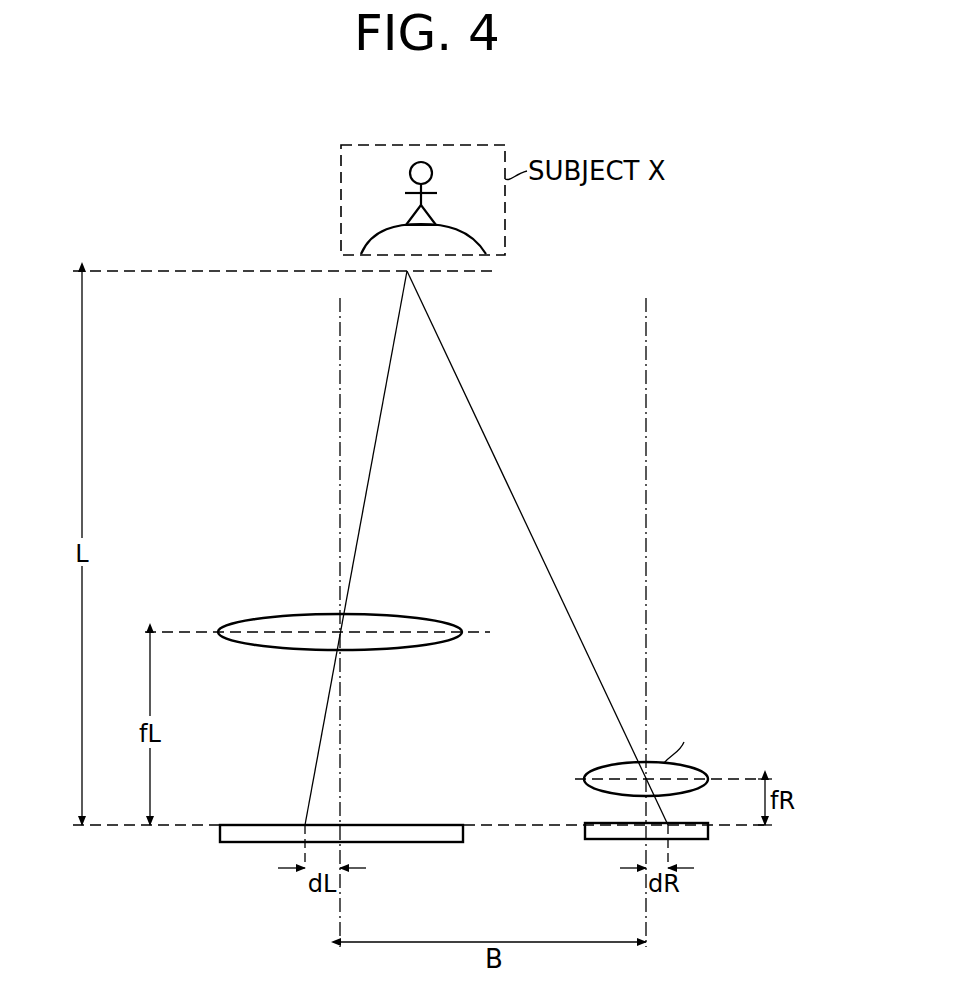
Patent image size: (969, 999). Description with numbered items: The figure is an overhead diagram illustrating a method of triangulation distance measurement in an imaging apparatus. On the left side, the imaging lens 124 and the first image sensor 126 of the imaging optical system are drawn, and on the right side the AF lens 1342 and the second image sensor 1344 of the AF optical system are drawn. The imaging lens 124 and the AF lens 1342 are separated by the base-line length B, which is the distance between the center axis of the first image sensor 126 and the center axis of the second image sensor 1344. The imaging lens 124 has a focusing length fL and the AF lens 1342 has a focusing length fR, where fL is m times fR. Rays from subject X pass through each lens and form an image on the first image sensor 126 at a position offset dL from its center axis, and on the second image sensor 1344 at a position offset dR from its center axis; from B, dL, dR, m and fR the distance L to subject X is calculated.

The imaging lens 124 is at (400, 614).
The first image sensor 126 is at (400, 824).
The AF lens 1342 is at (701, 771).
The second image sensor 1344 is at (709, 834).